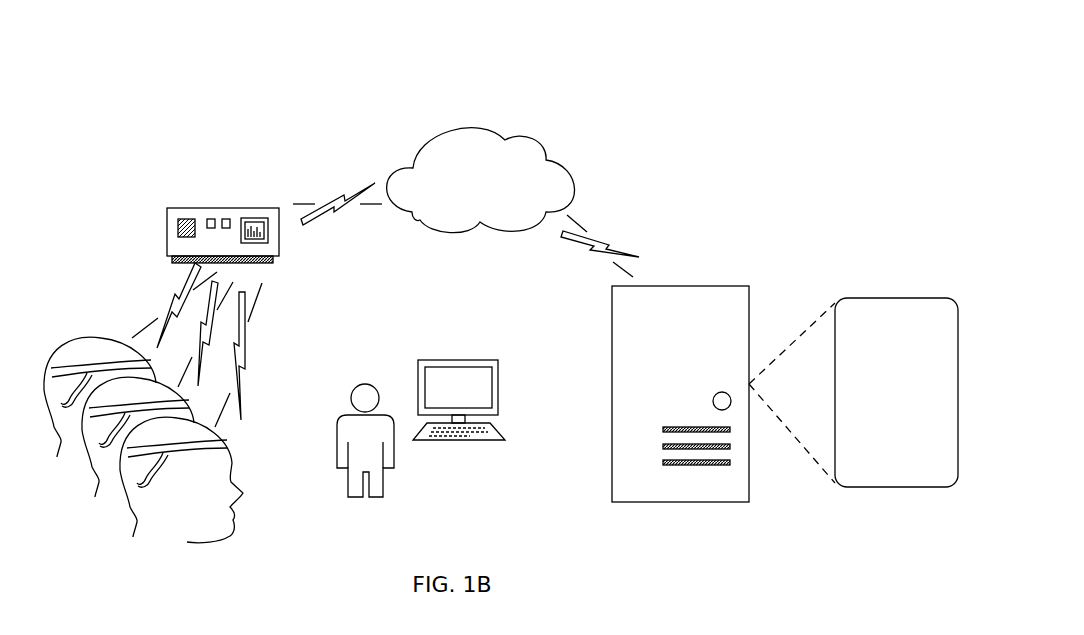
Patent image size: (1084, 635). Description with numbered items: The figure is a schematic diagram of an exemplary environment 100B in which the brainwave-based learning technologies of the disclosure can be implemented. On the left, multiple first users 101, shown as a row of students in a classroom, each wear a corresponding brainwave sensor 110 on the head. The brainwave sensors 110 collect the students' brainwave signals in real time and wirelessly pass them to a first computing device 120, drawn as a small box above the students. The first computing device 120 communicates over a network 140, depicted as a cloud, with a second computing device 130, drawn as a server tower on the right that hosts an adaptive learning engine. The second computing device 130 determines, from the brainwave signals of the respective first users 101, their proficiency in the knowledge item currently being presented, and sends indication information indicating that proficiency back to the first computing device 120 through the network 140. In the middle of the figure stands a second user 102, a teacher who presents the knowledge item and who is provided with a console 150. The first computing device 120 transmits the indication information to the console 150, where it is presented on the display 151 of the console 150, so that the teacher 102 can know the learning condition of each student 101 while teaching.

The environment 100B is at (233, 46).
The first users 101 is at (58, 350).
The brainwave sensors 110 is at (227, 447).
The first computing device 120 is at (232, 208).
The network 140 is at (496, 189).
The second computing device 130 is at (700, 286).
The second user 102 is at (393, 443).
The console 150 is at (500, 389).
The display 151 is at (445, 375).